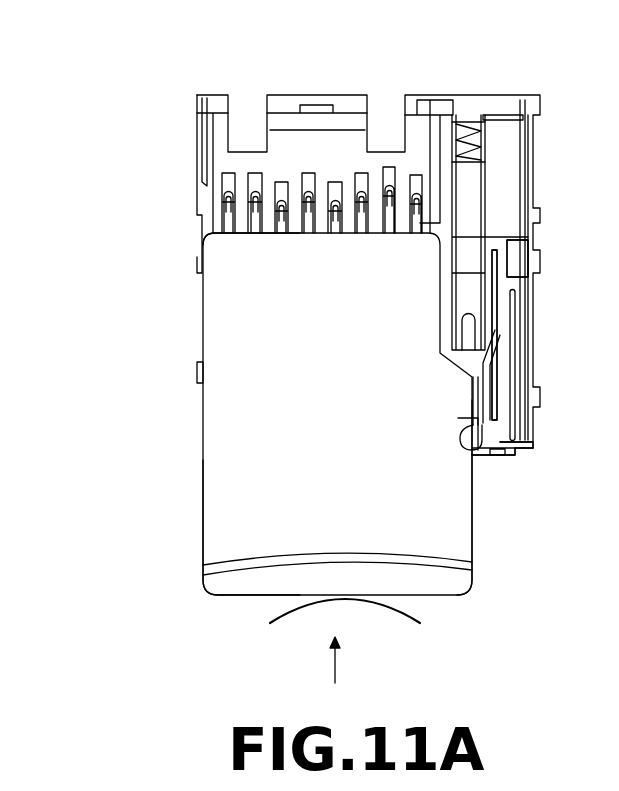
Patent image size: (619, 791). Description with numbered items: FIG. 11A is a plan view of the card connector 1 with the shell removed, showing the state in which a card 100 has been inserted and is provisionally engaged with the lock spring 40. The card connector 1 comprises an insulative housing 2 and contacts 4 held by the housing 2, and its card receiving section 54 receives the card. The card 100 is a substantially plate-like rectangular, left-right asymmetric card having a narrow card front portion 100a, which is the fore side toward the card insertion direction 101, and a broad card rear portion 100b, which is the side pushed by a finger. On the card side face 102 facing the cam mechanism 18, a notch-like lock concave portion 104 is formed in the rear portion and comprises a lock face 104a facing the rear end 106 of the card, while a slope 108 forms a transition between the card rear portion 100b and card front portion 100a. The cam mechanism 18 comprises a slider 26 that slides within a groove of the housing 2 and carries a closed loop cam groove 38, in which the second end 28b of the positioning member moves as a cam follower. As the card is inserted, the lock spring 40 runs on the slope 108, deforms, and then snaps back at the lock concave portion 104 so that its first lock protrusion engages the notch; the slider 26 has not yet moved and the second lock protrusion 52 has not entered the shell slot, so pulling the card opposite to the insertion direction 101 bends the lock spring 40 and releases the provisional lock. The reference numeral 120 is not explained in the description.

The card connector 1 is at (440, 73).
The housing 2 is at (288, 92).
The card receiving section 54 is at (337, 130).
The contacts 4 is at (223, 223).
The card 100 is at (302, 410).
The card front portion 100a is at (228, 291).
The card rear portion 100b is at (230, 498).
The card side face 102 is at (474, 542).
The rear end of the card 106 is at (453, 596).
The finger / push surface 120 is at (278, 620).
The card insertion direction 101 is at (334, 667).
The slope 108 is at (438, 237).
The second lock protrusion 52 is at (456, 393).
The lock spring 40 is at (462, 452).
The lock face 104a is at (456, 418).
The lock concave portion 104 is at (516, 452).
The cam mechanism 18 is at (518, 442).
The cam groove 38 is at (508, 335).
The second end of the positioning member 28b is at (516, 296).
The slider 26 is at (513, 244).